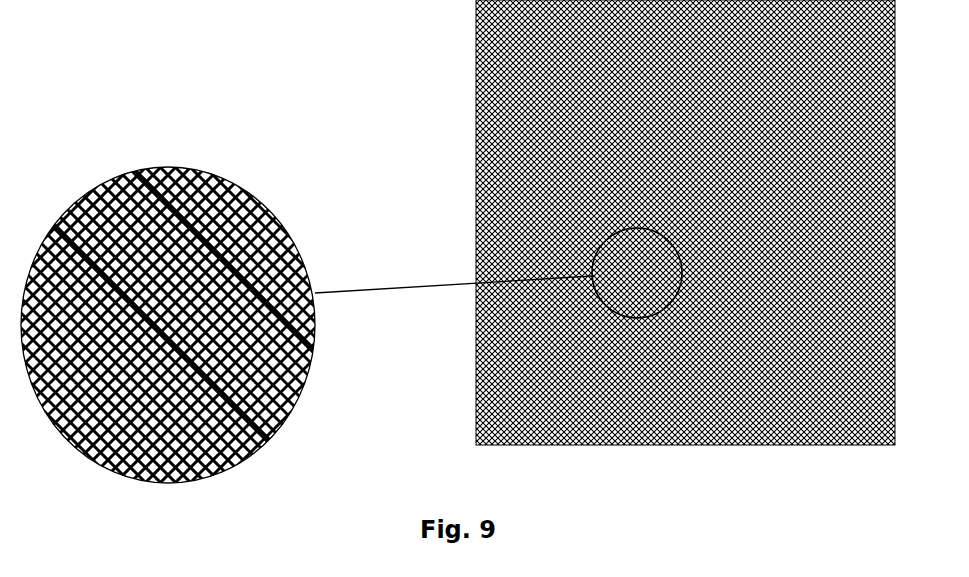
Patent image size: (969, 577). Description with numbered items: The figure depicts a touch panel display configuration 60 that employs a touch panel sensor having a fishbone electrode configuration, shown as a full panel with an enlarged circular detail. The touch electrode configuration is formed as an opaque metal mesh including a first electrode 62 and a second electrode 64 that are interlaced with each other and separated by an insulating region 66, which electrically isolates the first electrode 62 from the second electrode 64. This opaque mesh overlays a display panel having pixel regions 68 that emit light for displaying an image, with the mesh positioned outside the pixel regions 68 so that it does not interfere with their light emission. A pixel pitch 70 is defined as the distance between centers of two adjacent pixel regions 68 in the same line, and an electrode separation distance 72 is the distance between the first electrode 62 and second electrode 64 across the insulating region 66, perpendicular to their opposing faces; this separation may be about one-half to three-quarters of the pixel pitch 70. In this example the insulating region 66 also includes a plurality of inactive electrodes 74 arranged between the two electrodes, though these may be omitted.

The touch panel display configuration 60 is at (376, 64).
The first electrode 62 is at (180, 288).
The second electrode 64 is at (85, 200).
The insulating region 66 is at (282, 420).
The pixel regions 68 is at (90, 455).
The pixel pitch 70 is at (147, 462).
The electrode separation distance 72 is at (282, 433).
The inactive electrodes 74 is at (165, 178).